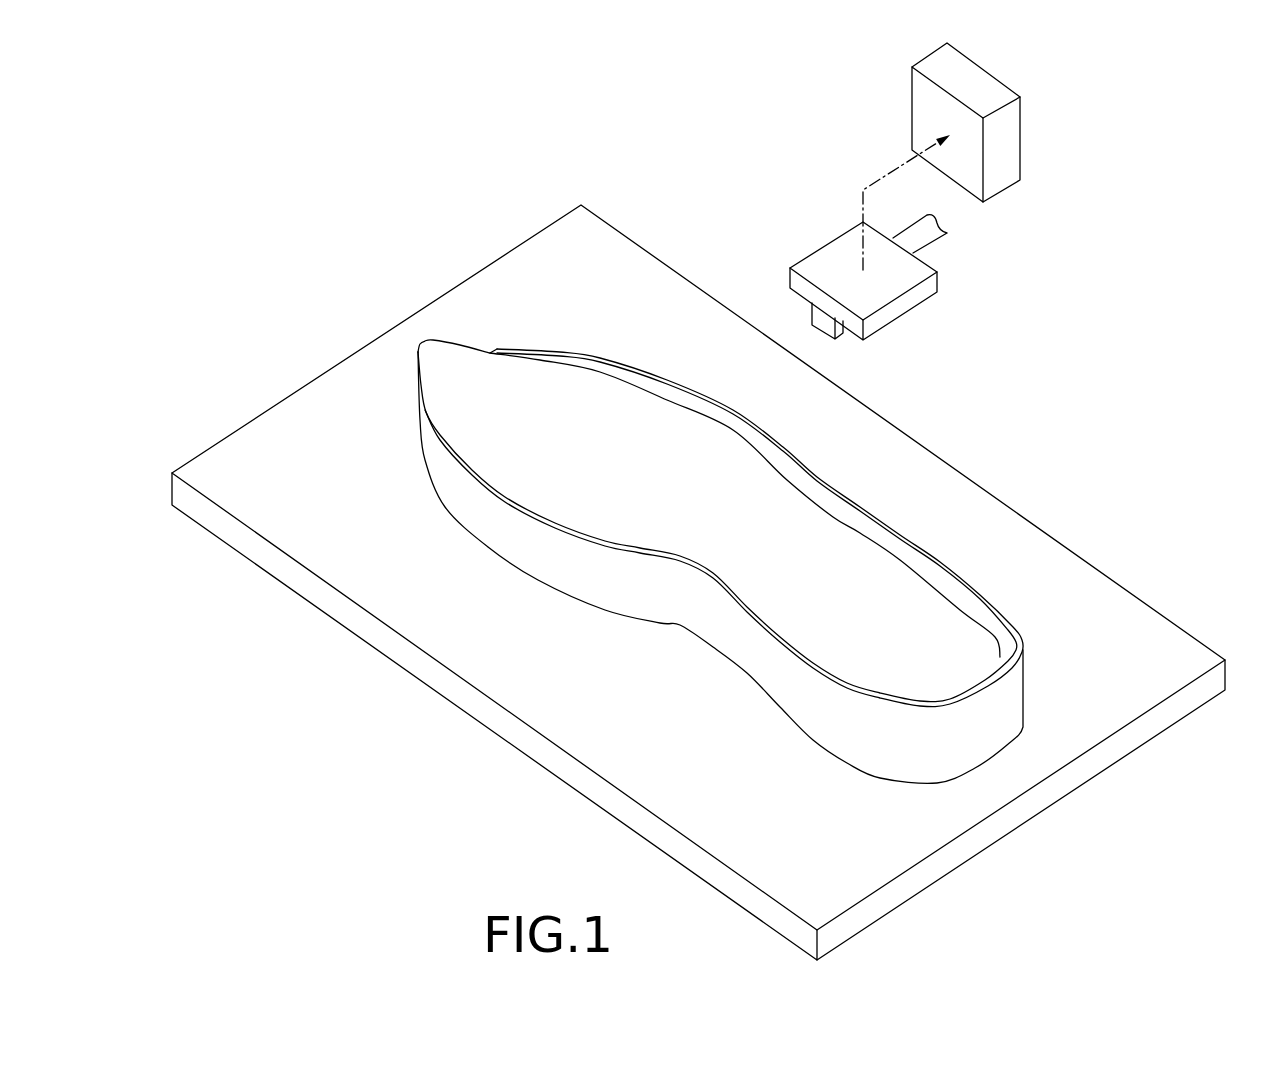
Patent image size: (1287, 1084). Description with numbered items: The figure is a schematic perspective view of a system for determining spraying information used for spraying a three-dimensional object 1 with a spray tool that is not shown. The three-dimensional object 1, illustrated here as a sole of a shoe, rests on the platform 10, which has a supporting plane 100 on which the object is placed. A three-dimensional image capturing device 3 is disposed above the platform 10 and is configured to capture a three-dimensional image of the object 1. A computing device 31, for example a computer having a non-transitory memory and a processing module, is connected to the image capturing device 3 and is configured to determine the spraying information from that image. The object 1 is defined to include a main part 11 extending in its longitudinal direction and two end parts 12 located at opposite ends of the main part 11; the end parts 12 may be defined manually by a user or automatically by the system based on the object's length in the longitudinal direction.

The 3D object 1 is at (720, 537).
The platform 10 is at (703, 582).
The supporting plane 100 is at (1017, 538).
The main part 11 is at (778, 495).
The end parts 12 is at (442, 357).
The 3D image capturing device 3 is at (810, 230).
The computing device 31 is at (1022, 148).